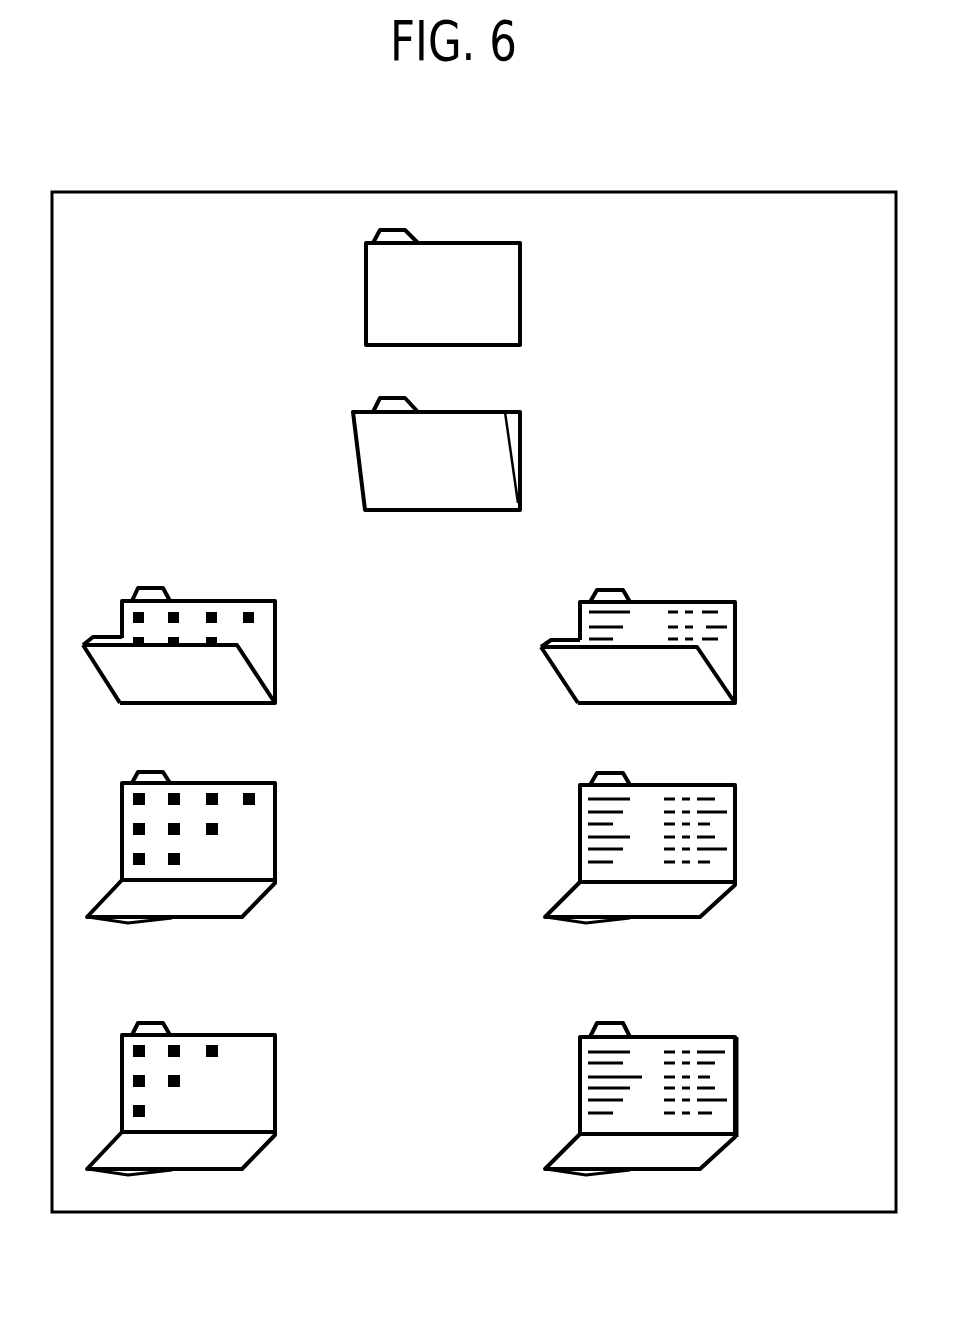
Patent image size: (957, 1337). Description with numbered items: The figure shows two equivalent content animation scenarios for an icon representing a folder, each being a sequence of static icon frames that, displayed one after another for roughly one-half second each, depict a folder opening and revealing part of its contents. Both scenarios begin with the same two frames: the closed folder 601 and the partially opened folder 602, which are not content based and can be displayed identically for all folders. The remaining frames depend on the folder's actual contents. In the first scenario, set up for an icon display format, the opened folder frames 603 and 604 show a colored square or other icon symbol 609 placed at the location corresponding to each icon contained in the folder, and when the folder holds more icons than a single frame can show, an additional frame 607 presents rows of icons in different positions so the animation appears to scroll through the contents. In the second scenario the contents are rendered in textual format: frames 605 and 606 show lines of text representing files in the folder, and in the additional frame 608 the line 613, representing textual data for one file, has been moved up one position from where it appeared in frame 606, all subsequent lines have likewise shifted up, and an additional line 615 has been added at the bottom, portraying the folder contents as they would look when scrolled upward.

The static icon depiction (first frame) 601 is at (533, 240).
The static icon depiction (second frame) 602 is at (533, 407).
The static icon depiction (third frame, icon format) 603 is at (240, 614).
The static icon depiction (fourth frame, icon format) 604 is at (290, 779).
The static icon depiction (third frame, textual format) 605 is at (750, 598).
The static icon depiction (fourth frame, textual format) 606 is at (747, 785).
The additional frame (icon format) 607 is at (290, 1031).
The additional frame (textual format) 608 is at (750, 1032).
The icon symbol 609 is at (132, 609).
The line 613 is at (727, 812).
The additional line 615 is at (718, 1115).